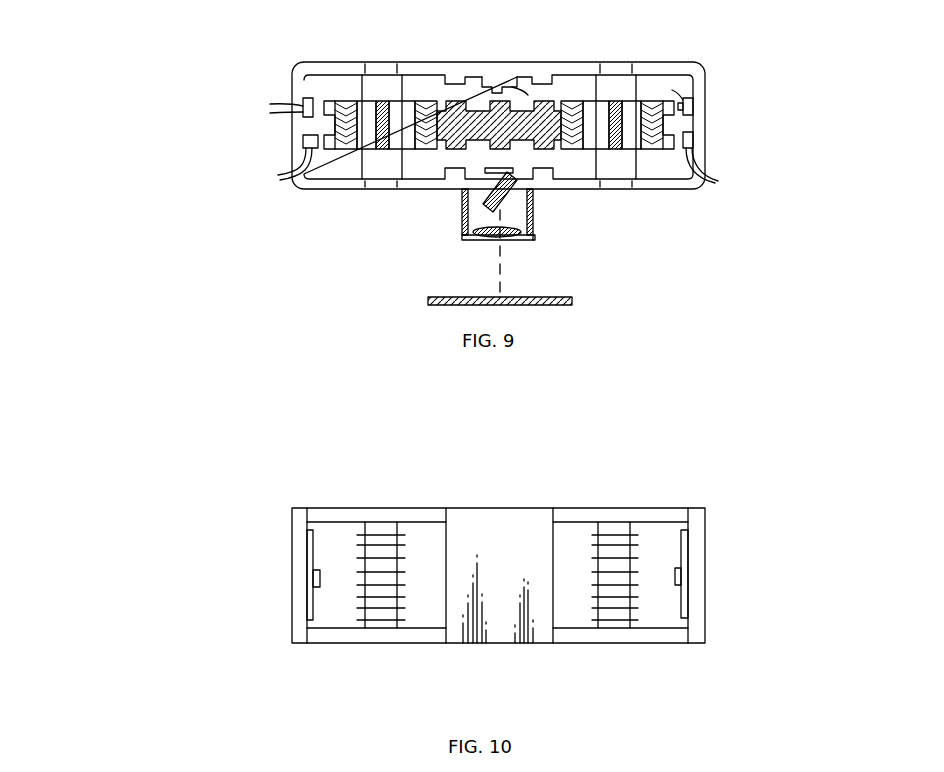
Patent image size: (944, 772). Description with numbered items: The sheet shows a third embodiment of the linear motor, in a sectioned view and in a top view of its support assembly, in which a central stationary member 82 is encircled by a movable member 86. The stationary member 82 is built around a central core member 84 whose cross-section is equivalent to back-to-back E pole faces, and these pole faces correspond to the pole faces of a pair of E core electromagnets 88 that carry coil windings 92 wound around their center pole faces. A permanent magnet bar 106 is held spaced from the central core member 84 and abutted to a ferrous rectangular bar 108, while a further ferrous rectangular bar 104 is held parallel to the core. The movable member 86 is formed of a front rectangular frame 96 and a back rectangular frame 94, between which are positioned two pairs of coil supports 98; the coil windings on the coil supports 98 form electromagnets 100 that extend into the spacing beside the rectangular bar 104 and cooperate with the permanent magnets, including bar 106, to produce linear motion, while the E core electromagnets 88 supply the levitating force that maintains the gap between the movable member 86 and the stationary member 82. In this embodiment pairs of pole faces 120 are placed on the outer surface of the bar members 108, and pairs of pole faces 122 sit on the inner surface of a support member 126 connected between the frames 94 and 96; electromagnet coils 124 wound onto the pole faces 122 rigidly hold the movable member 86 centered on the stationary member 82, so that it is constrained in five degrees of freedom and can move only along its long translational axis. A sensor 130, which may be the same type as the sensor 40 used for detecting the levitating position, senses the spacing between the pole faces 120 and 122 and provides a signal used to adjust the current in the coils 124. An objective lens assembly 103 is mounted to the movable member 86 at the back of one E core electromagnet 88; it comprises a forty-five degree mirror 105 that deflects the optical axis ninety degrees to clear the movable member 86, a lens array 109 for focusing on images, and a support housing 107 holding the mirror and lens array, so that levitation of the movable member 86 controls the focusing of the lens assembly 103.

In FIG. 9, the movable member 86 is at (266, 44).
In FIG. 10, the movable member 86 is at (656, 486).
In FIG. 9, the rectangular bar 108 is at (656, 190).
In FIG. 9, the coil windings 92 is at (498, 76).
In FIG. 9, the sensor 40 is at (512, 87).
In FIG. 10, the sensor 40 is at (676, 578).
In FIG. 9, the electromagnets 100 is at (363, 152).
In FIG. 10, the electromagnets 100 is at (362, 545).
In FIG. 9, the central core member 84 is at (454, 100).
In FIG. 9, the rectangular bar 104 is at (381, 100).
In FIG. 9, the permanent magnet bar 106 is at (618, 100).
In FIG. 9, the support member 126 is at (292, 144).
In FIG. 10, the support member 126 is at (293, 612).
In FIG. 9, the sensor 130 is at (300, 170).
In FIG. 9, the pole faces 120 is at (683, 100).
In FIG. 9, the electromagnet coils 124 is at (695, 108).
In FIG. 9, the pole faces 122 is at (700, 152).
In FIG. 10, the pole faces 122 is at (686, 595).
In FIG. 9, the E core electromagnets 88 is at (464, 200).
In FIG. 10, the E core electromagnets 88 is at (497, 508).
In FIG. 9, the support housing 107 is at (463, 240).
In FIG. 9, the lens array 109 is at (506, 242).
In FIG. 9, the objective lens assembly 103 is at (537, 248).
In FIG. 9, the 45° mirror 105 is at (533, 220).
In FIG. 9, the stationary member 82 is at (522, 158).
In FIG. 10, the back rectangular frame 94 is at (323, 510).
In FIG. 10, the front rectangular frame 96 is at (318, 637).
In FIG. 10, the coil supports 98 is at (370, 567).